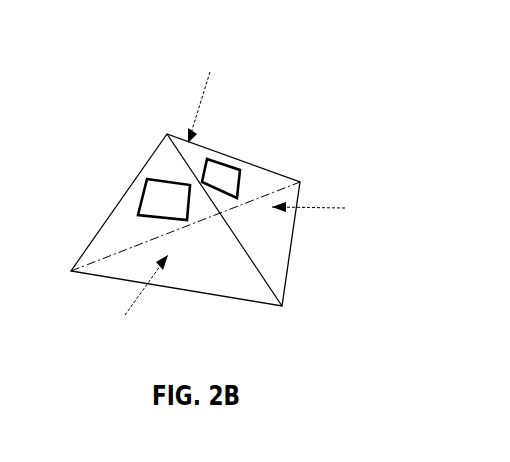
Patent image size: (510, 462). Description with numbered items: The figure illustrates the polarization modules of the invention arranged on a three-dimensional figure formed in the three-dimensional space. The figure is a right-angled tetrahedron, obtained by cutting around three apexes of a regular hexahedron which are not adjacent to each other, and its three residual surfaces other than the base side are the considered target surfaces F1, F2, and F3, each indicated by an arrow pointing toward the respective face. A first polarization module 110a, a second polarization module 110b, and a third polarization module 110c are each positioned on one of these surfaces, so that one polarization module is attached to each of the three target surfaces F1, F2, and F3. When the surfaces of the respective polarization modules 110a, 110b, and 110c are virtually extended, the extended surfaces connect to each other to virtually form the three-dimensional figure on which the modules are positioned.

The first polarization module 110a is at (157, 203).
The second polarization module 110b is at (227, 172).
The third polarization module 110c is at (186, 178).
The first target surface F1 is at (137, 305).
The second target surface F2 is at (324, 205).
The third target surface F3 is at (209, 92).